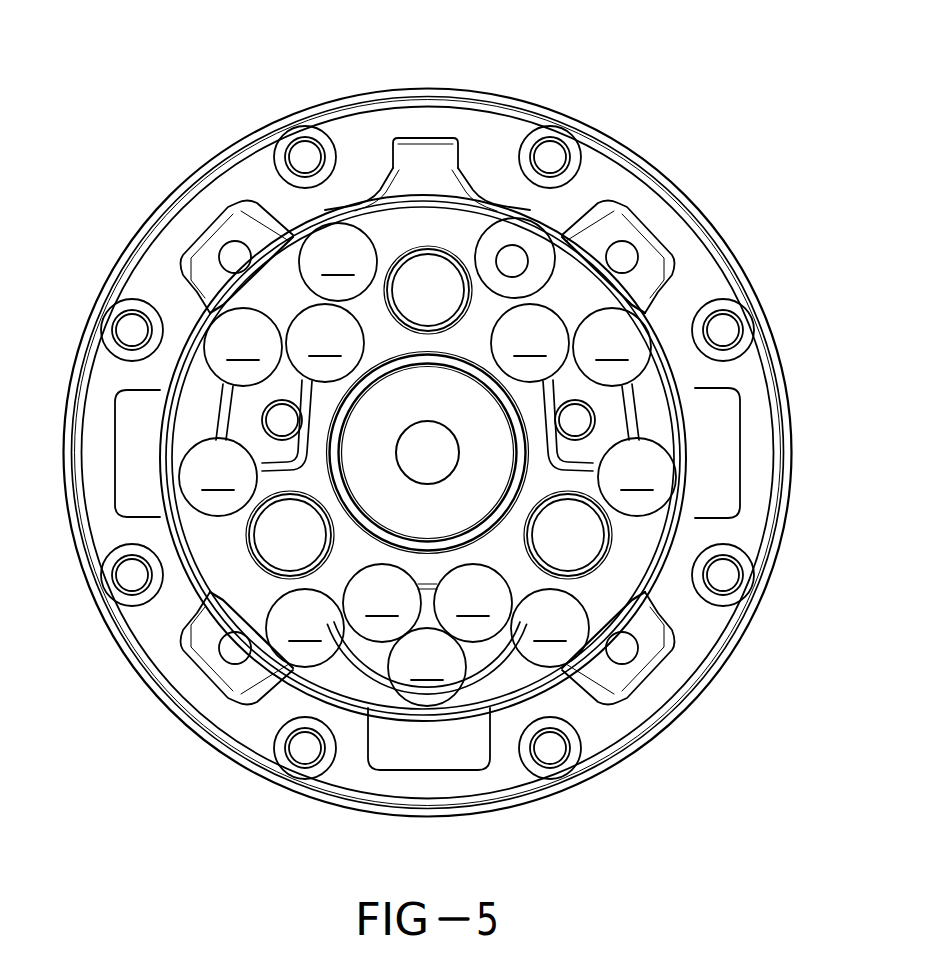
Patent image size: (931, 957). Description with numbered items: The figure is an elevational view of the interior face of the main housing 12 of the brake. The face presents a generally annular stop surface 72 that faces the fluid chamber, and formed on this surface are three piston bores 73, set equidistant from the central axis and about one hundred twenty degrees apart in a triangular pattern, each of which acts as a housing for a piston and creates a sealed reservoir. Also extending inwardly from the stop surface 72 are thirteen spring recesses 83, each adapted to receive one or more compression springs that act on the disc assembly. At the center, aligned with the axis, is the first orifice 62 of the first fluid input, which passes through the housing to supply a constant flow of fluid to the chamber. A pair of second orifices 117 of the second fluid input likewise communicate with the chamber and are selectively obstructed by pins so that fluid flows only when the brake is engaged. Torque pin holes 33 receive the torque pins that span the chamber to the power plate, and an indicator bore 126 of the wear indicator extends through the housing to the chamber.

The main housing 12 is at (245, 138).
The stop surface 72 is at (395, 226).
The piston bores 73 is at (428, 288).
The spring recesses 83 is at (542, 250).
The indicator bore 126 is at (510, 262).
The torque pin holes 33 is at (233, 252).
The second orifice 117 is at (270, 418).
The first orifice 62 is at (398, 453).